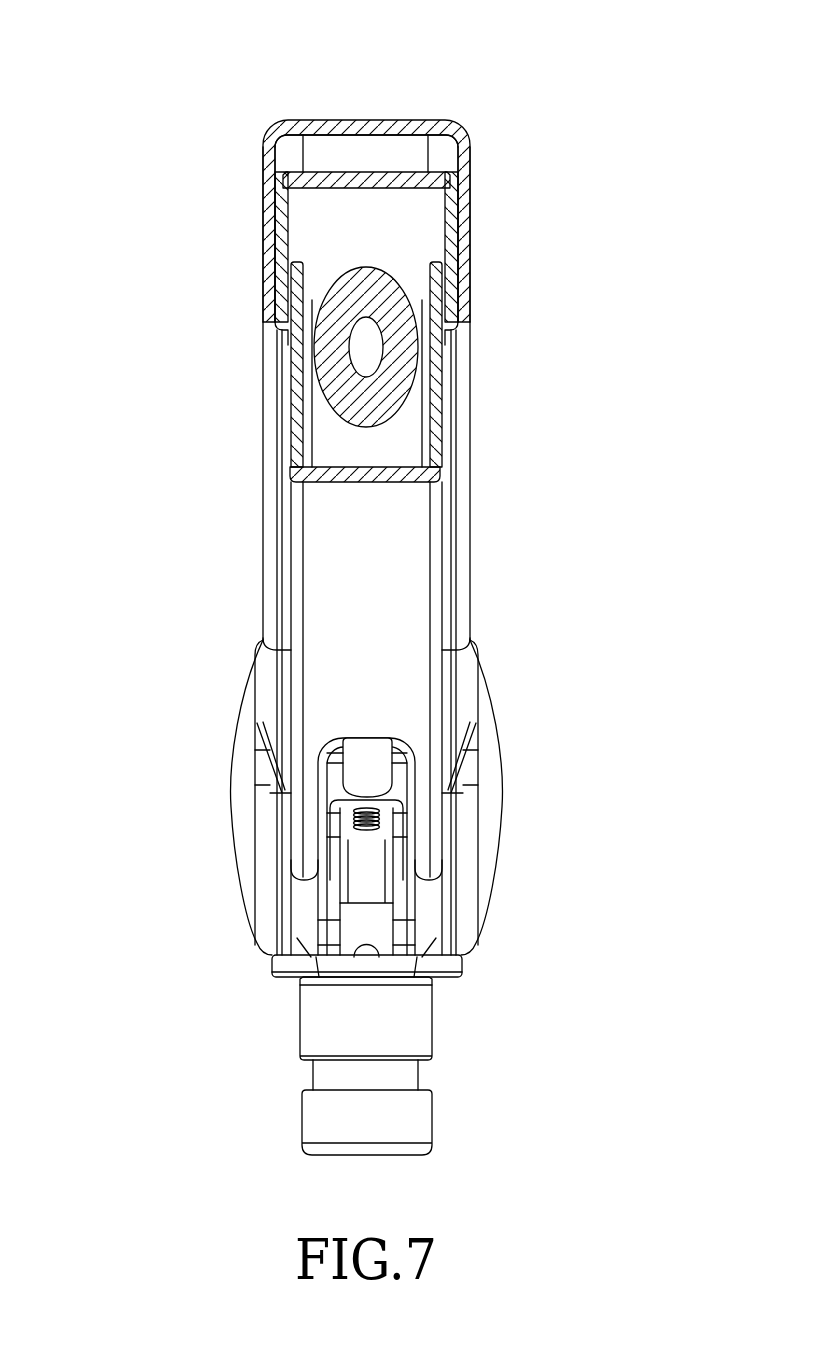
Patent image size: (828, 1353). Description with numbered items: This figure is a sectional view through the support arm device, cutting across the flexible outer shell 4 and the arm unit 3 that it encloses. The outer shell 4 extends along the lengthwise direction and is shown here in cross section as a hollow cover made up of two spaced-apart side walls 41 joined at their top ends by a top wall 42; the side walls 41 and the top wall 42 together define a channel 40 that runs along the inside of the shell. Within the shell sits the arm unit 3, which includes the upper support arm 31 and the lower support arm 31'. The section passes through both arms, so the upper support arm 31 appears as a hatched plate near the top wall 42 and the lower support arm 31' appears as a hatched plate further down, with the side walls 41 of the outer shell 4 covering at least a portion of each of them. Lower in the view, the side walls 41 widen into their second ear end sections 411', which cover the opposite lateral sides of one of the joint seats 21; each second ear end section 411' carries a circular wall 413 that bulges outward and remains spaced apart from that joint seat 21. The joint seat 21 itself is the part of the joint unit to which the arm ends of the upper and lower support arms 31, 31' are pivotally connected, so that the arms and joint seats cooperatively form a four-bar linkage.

The outer shell 4 is at (281, 121).
The arm unit 3 is at (331, 160).
The upper support arm 31 is at (366, 118).
The top wall 42 is at (421, 120).
The channel 40 is at (425, 151).
The side walls 41 is at (466, 243).
The lower support arm 31' is at (427, 505).
The second ear end sections 411' is at (372, 755).
The circular wall 413 is at (235, 837).
The joint seat 21 is at (432, 1110).